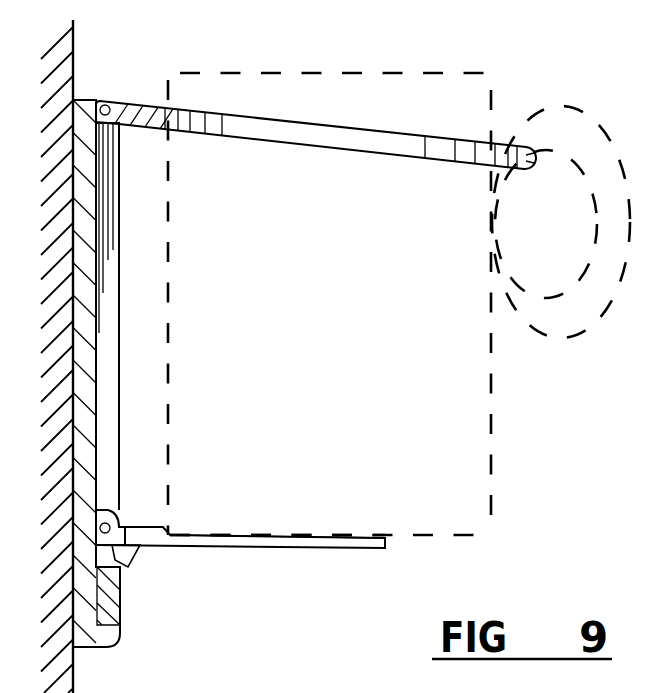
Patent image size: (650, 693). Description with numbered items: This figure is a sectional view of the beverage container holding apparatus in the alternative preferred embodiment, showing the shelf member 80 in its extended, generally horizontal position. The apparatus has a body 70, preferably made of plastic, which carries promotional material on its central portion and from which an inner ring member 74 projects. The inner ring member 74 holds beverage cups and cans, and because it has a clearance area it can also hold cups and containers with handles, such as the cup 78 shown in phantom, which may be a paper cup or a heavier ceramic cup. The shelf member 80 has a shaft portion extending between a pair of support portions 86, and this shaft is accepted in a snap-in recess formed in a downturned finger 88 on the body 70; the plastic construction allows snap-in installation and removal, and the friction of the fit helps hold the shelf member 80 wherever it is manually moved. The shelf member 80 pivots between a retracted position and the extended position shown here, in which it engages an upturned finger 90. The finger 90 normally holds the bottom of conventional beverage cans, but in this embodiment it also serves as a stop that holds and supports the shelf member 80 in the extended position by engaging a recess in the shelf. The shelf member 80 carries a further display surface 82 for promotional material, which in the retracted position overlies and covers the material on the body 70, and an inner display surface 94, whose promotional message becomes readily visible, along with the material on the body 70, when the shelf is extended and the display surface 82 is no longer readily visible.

The body 70 is at (85, 100).
The inner ring member 74 is at (315, 125).
The cup 78 is at (433, 72).
The shelf member 80 is at (372, 550).
The display surface 82 is at (284, 557).
The support portions 86 is at (157, 538).
The downturned finger 88 is at (115, 510).
The upturned finger 90 is at (128, 565).
The inner display surface 94 is at (322, 538).